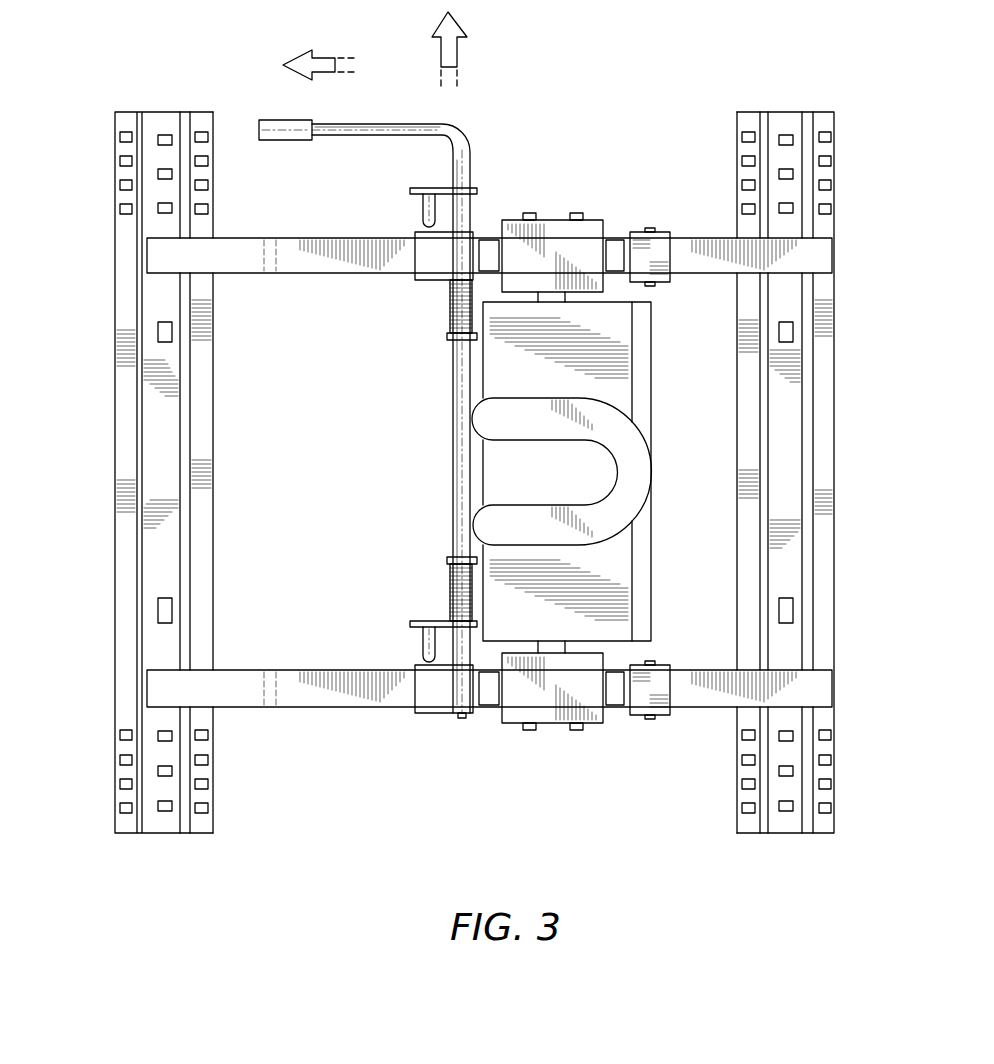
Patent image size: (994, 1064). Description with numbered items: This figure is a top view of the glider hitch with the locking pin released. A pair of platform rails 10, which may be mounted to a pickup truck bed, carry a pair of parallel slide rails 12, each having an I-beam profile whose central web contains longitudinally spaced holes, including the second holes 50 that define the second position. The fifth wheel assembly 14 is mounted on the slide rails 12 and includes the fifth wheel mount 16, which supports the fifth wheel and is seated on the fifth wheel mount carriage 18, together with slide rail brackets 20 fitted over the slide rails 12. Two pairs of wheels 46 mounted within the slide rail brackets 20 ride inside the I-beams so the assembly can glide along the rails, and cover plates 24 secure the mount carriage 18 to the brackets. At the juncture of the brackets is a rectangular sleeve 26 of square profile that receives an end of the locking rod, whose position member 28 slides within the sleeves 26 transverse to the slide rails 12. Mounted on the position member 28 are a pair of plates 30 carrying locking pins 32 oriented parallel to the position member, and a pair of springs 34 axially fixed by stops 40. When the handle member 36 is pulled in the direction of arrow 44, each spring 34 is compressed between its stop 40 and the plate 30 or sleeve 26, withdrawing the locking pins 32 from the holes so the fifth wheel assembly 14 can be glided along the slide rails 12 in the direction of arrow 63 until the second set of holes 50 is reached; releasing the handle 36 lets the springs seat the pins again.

The platform rail 10 is at (122, 232).
The slide rail 12 is at (226, 265).
The fifth wheel assembly 14 is at (601, 471).
The fifth wheel mount 16 is at (640, 456).
The fifth wheel mount carriage 18 is at (620, 330).
The slide rail bracket 20 is at (664, 240).
The cover plate 24 is at (566, 228).
The rectangular sleeve 26 is at (450, 258).
The position member 28 is at (456, 470).
The plate 30 is at (428, 192).
The locking pin 32 is at (418, 212).
The spring 34 is at (452, 306).
The handle member 36 is at (283, 140).
The stop 40 is at (458, 337).
The arrow 44 is at (457, 50).
The wheel 46 is at (490, 245).
The second hole 50 is at (265, 254).
The arrow 63 is at (312, 58).